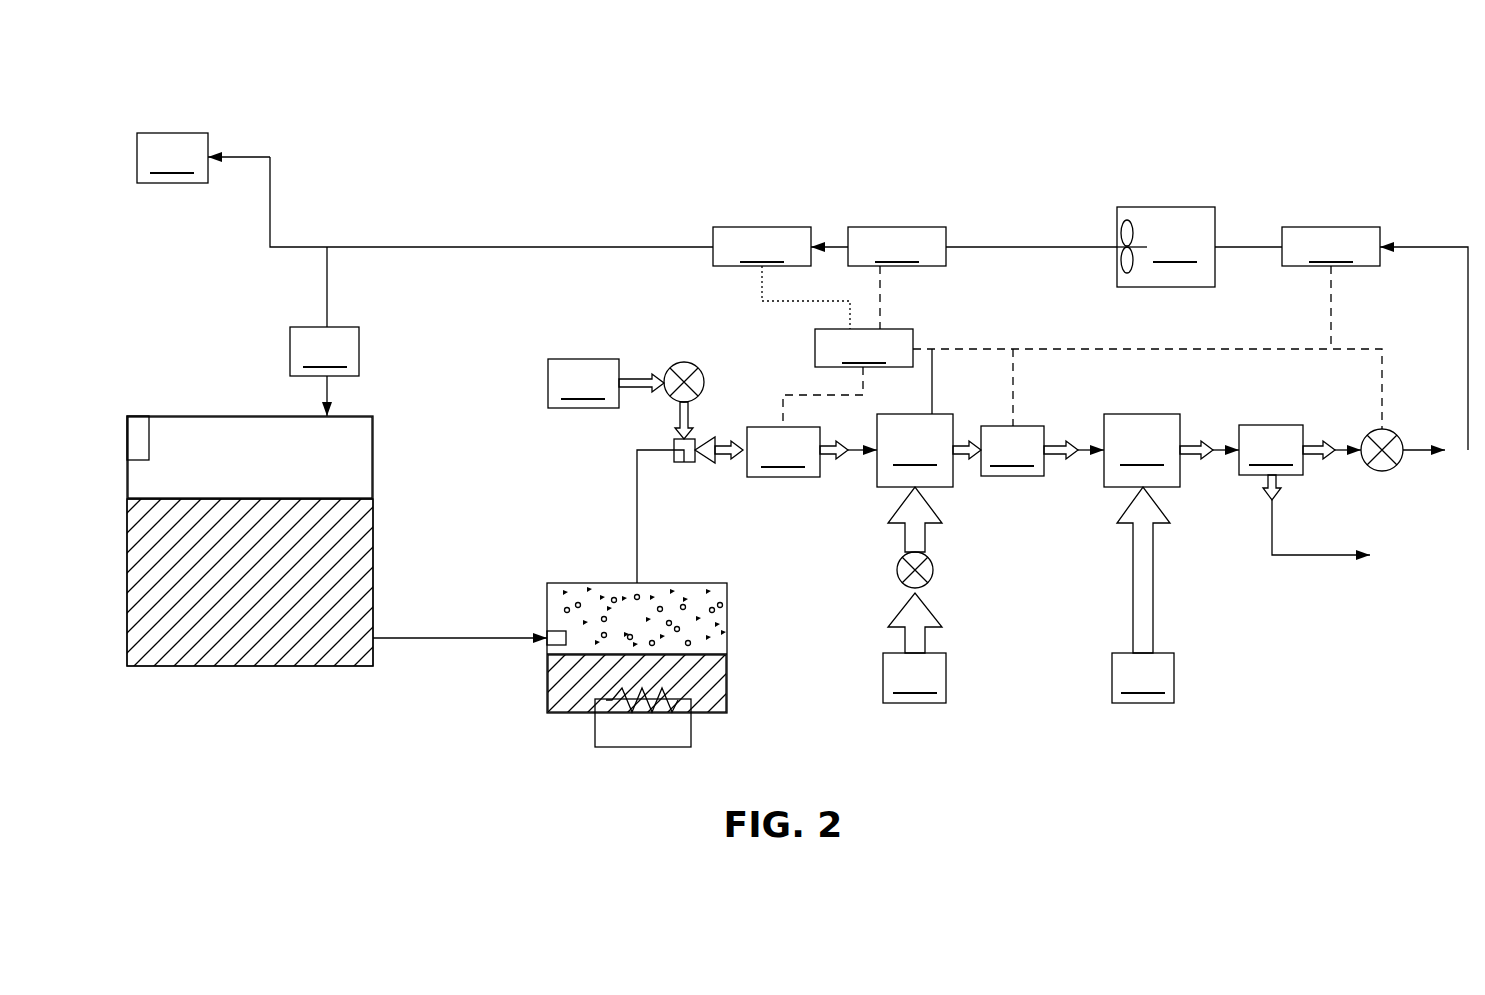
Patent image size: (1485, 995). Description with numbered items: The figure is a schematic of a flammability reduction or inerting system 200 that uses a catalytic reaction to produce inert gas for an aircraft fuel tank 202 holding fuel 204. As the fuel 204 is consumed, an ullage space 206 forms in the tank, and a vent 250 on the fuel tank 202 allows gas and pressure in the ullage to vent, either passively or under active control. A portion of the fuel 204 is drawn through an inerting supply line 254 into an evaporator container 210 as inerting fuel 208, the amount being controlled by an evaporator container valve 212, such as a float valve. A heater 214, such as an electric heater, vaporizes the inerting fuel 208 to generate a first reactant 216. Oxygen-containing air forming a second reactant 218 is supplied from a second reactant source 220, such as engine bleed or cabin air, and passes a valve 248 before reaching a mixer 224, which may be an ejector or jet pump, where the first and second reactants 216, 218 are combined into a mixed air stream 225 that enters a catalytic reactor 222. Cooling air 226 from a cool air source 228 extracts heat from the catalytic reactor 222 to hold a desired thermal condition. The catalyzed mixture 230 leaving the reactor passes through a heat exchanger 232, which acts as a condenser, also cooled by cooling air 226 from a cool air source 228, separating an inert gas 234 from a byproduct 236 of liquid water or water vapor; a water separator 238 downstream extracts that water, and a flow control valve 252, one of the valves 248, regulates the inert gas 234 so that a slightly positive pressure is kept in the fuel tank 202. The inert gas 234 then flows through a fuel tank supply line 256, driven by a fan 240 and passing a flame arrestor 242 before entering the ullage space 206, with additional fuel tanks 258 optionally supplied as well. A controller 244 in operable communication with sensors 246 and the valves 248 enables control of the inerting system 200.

The inerting system 200 is at (288, 98).
The fuel tank 202 is at (250, 416).
The fuel 204 is at (240, 640).
The ullage space 206 is at (352, 468).
The inerting fuel 208 is at (710, 692).
The evaporator container 210 is at (600, 583).
The evaporator container valve 212 is at (540, 648).
The heater 214 is at (680, 730).
The first reactant 216 is at (710, 618).
The second reactant 218 is at (640, 378).
The second reactant source 220 is at (583, 383).
The catalytic reactor 222 is at (915, 450).
The mixer 224 is at (688, 462).
The mixed air stream 225 is at (830, 457).
The cooling air 226 is at (928, 538).
The cool air source 228 is at (1028, 678).
The catalyzed mixture 230 is at (962, 442).
The heat exchanger 232 is at (1142, 450).
The inert gas 234 is at (1318, 447).
The byproduct 236 is at (1265, 478).
The water separator 238 is at (1271, 450).
The fan 240 is at (1166, 247).
The flame arrestor 242 is at (324, 331).
The controller 244 is at (1072, 347).
The sensors 246 is at (1046, 352).
The valves 248 is at (690, 362).
The vent 250 is at (138, 425).
The flow control valve 252 is at (1383, 473).
The inerting supply line 254 is at (447, 645).
The fuel tank supply line 256 is at (490, 246).
The additional fuel tanks 258 is at (203, 158).